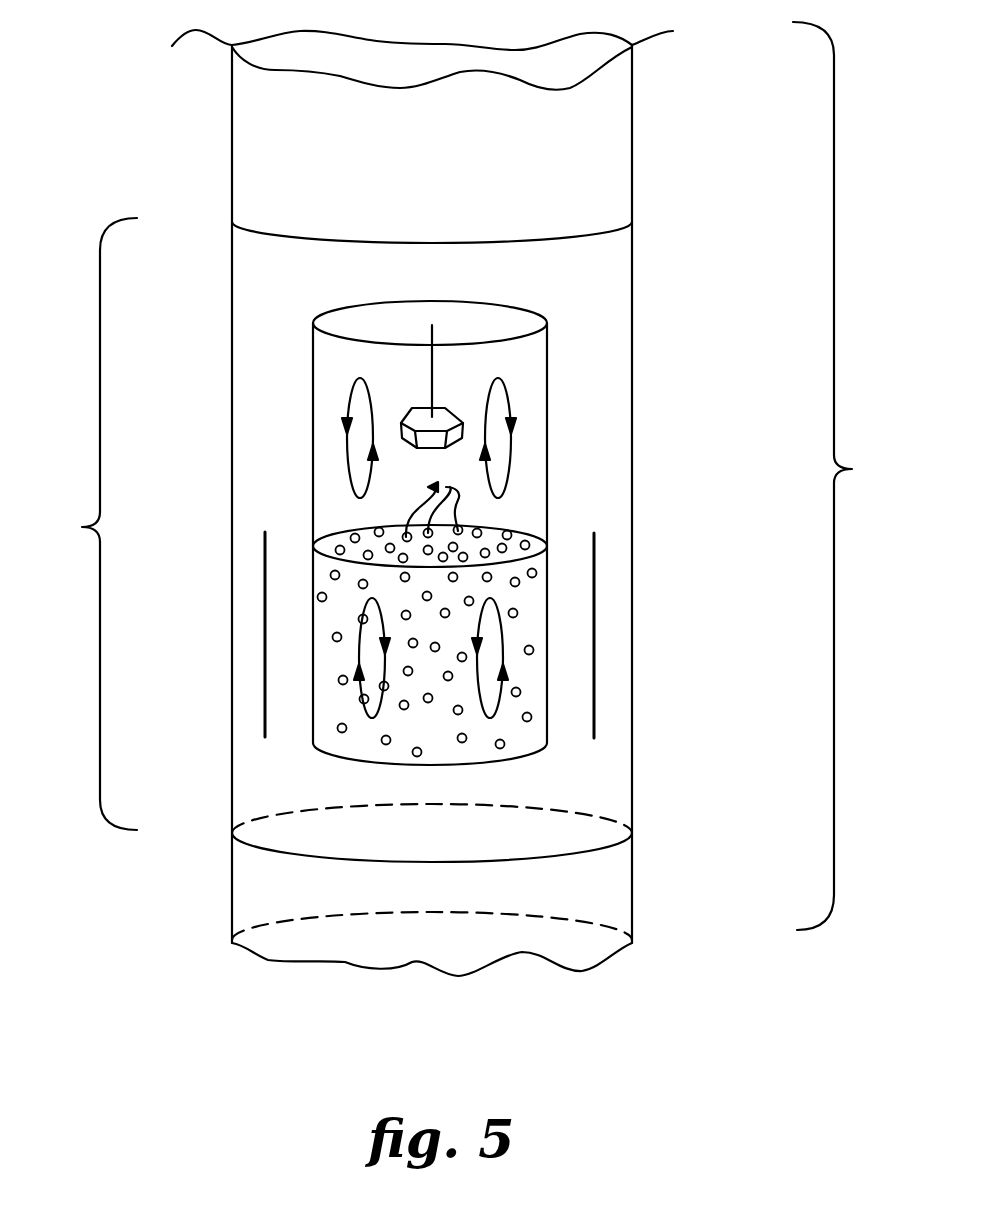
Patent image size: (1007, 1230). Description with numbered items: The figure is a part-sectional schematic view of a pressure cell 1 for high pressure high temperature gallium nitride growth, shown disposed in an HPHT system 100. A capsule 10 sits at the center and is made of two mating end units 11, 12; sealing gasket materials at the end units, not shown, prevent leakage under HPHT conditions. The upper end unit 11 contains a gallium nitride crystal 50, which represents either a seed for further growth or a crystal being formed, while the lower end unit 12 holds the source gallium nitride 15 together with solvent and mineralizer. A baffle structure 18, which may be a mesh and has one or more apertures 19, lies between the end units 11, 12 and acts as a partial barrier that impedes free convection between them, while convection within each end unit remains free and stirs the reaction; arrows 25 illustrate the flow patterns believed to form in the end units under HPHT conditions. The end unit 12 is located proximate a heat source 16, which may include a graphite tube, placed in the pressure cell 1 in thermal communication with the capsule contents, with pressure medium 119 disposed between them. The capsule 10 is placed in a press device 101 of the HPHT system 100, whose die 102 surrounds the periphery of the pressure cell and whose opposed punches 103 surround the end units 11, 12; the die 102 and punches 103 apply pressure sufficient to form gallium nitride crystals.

The pressure cell 1 is at (96, 524).
The capsule 10 is at (548, 382).
The end unit 11 is at (313, 424).
The end unit 12 is at (313, 614).
The source gallium nitride 15 is at (517, 612).
The heat source 16 is at (265, 680).
The baffle structure 18 is at (507, 525).
The apertures 19 is at (427, 503).
The arrows 25 is at (348, 394).
The gallium nitride crystal 50 is at (450, 405).
The HPHT system 100 is at (849, 476).
The press device 101 is at (183, 32).
The die 102 is at (439, 428).
The opposed punches 103 is at (432, 537).
The pressure medium 119 is at (433, 663).